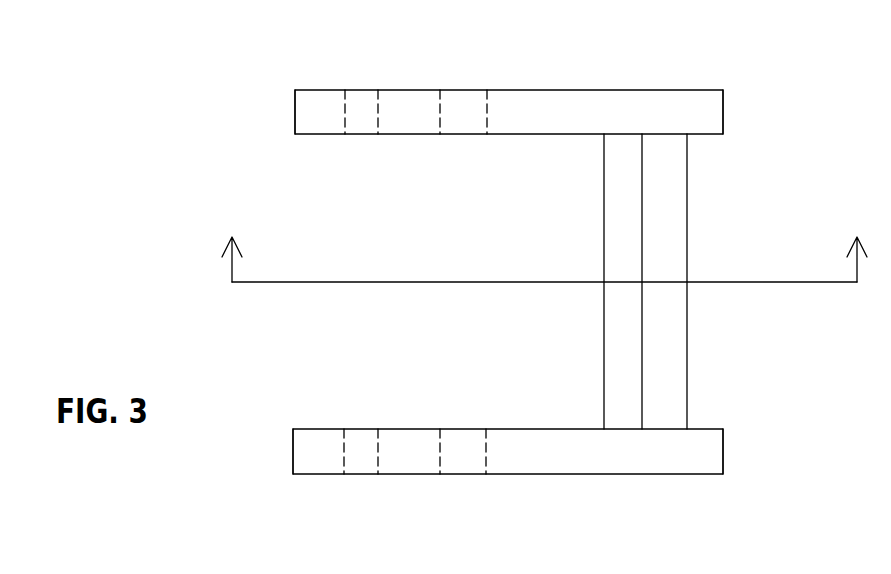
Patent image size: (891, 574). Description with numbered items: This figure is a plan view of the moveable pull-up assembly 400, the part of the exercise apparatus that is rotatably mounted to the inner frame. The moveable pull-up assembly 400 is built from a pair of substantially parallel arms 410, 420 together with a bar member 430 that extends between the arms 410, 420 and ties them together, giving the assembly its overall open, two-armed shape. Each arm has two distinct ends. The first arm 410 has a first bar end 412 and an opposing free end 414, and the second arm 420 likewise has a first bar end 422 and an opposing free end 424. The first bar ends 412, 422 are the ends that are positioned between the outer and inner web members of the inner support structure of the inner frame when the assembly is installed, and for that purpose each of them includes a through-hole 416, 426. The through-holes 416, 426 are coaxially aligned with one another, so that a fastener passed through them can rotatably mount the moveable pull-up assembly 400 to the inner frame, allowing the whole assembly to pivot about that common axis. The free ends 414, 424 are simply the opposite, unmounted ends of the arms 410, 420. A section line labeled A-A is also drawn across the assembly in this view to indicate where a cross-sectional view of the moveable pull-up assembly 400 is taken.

The moveable pull-up assembly 400 is at (522, 58).
The arm 410 is at (587, 90).
The first bar end 412 is at (293, 113).
The free end 414 is at (725, 112).
The through-hole 416 is at (358, 134).
The arm 420 is at (547, 474).
The first bar end 422 is at (293, 450).
The free end 424 is at (725, 450).
The through-hole 426 is at (358, 429).
The bar member 430 is at (604, 228).